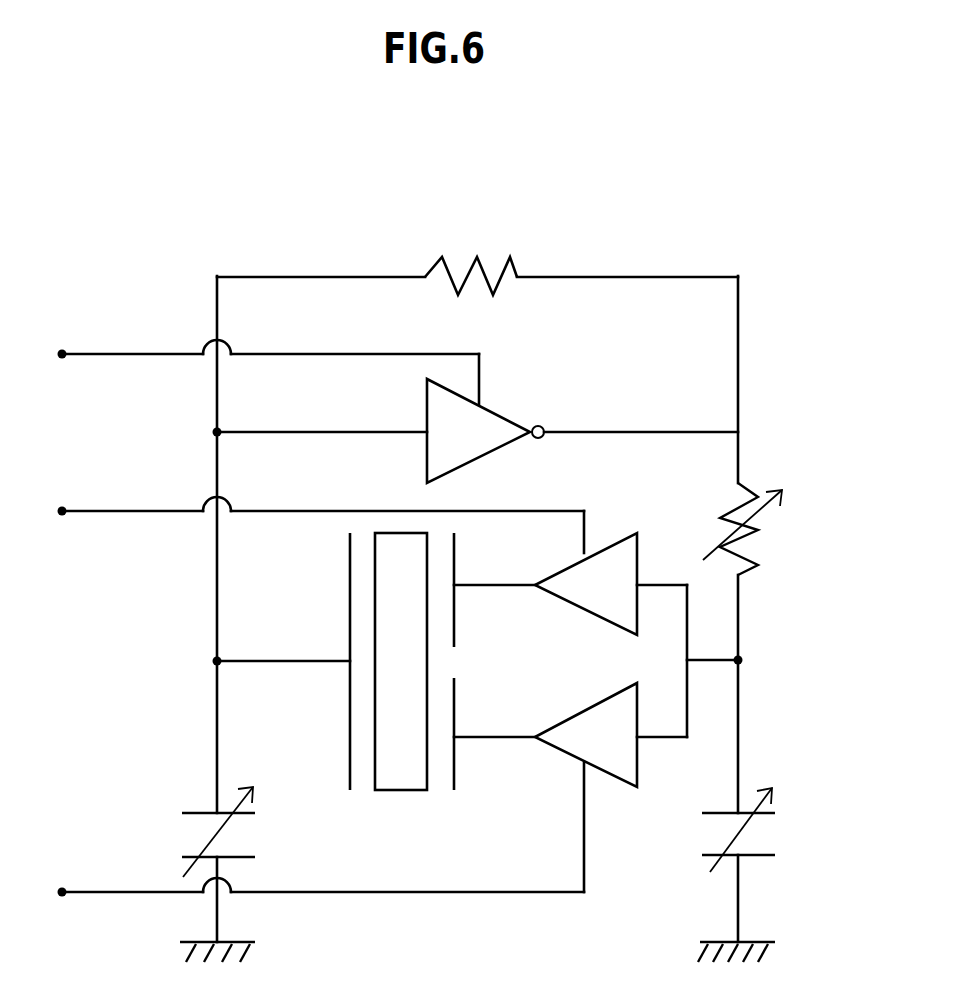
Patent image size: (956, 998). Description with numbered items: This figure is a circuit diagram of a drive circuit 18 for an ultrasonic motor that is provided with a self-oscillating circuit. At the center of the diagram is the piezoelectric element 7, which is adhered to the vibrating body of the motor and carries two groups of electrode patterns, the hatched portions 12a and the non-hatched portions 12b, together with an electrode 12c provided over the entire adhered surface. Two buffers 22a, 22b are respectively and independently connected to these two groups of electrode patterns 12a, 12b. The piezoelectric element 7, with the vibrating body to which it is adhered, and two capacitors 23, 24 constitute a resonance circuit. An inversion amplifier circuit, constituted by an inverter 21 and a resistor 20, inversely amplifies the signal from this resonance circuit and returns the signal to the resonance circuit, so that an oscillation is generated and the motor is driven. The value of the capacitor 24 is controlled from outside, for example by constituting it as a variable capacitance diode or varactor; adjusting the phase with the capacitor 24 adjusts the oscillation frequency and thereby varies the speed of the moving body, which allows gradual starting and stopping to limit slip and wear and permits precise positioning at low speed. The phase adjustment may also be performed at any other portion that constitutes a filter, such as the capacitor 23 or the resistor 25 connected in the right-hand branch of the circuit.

The drive circuit 18 is at (715, 237).
The resistor 20 is at (477, 260).
The inverter 21 is at (488, 410).
The buffer 22a is at (608, 542).
The buffer 22b is at (618, 782).
The resistor 25 is at (763, 522).
The piezoelectric element 7 is at (395, 778).
The electrode pattern (hatched portions) 12a is at (455, 607).
The electrode pattern (non-hatched portions) 12b is at (455, 772).
The electrode 12c is at (348, 720).
The capacitor 23 is at (185, 832).
The capacitor 24 is at (765, 840).